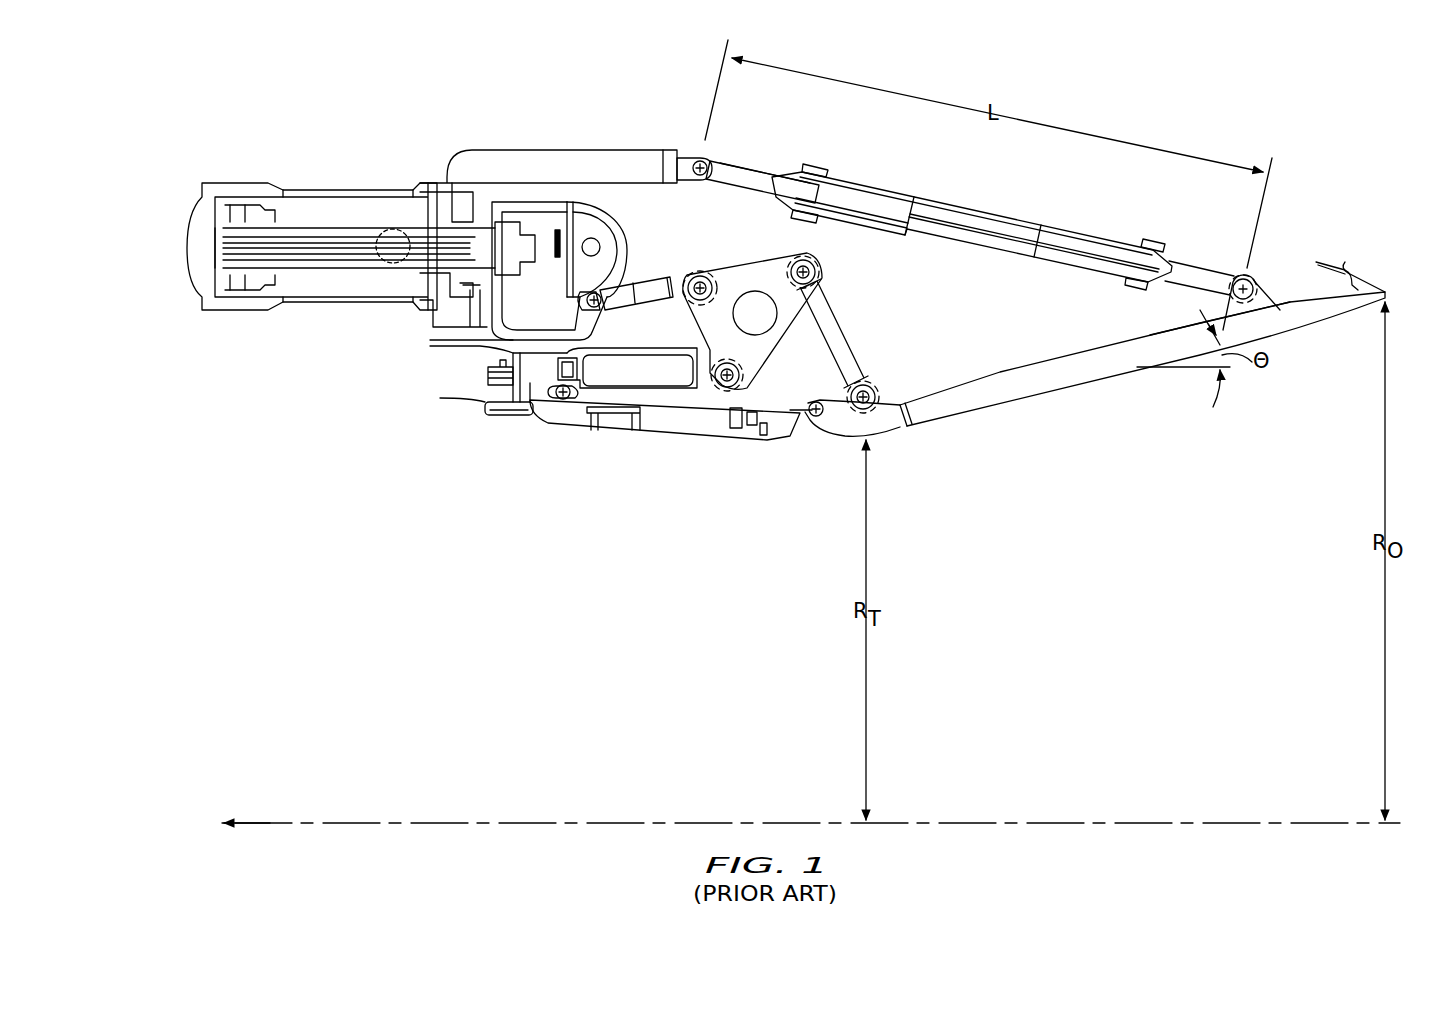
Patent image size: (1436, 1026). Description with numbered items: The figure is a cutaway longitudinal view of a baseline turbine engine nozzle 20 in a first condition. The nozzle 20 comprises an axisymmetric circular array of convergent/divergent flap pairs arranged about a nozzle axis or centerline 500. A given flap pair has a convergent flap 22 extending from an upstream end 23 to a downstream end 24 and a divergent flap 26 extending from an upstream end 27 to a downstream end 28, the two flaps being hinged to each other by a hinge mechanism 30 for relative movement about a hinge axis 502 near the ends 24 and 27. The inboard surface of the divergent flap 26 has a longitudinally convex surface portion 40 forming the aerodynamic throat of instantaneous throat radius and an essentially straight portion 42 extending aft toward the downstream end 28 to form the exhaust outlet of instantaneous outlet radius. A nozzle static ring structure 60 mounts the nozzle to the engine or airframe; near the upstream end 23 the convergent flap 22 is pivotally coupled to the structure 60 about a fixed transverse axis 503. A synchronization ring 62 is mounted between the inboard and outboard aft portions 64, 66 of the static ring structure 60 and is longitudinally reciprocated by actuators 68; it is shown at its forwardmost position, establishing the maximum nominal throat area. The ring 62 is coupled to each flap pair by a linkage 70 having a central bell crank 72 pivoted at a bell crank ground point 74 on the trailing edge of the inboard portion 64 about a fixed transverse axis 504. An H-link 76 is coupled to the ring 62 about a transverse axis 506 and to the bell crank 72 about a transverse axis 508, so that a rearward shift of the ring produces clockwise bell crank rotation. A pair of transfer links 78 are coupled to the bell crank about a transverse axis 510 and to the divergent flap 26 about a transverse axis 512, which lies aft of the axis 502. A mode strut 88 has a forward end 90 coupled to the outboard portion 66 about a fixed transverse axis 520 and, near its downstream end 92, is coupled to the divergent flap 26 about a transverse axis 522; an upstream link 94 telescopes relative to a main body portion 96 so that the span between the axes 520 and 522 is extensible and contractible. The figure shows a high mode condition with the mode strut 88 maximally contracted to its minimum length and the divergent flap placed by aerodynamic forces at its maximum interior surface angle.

The turbine engine nozzle 20 is at (460, 107).
The convergent flap 22 is at (668, 426).
The upstream end of convergent flap 23 is at (540, 415).
The downstream end of convergent flap 24 is at (808, 436).
The divergent flap 26 is at (1000, 404).
The upstream end of divergent flap 27 is at (830, 443).
The downstream end of divergent flap 28 is at (1380, 308).
The hinge mechanism 30 is at (808, 400).
The longitudinally convex surface portion 40 is at (872, 440).
The longitudinally straight portion 42 is at (1100, 378).
The nozzle static ring structure 60 is at (470, 168).
The synchronization ring 62 is at (585, 202).
The inboard aft portion of static ring structure 64 is at (667, 348).
The outboard aft portion of static ring structure 66 is at (645, 165).
The actuator 68 is at (333, 212).
The linkage 70 is at (876, 310).
The central bell crank 72 is at (746, 262).
The bell crank ground point 74 is at (748, 433).
The H-link 76 is at (642, 285).
The transfer link 78 is at (846, 323).
The mode strut 88 is at (1014, 206).
The forward end of mode strut 90 is at (726, 156).
The downstream end of mode strut 92 is at (1233, 262).
The upstream link 94 is at (757, 175).
The main body portion 96 is at (1090, 250).
The nozzle axis 500 is at (337, 820).
The hinge axis 502 is at (790, 416).
The fixed transverse axis 503 is at (575, 392).
The fixed transverse axis 504 is at (733, 388).
The transverse axis 506 is at (586, 300).
The transverse axis 508 is at (700, 274).
The transverse axis 510 is at (818, 270).
The transverse axis 512 is at (880, 392).
The fixed transverse axis 520 is at (695, 160).
The transverse axis 522 is at (1258, 276).